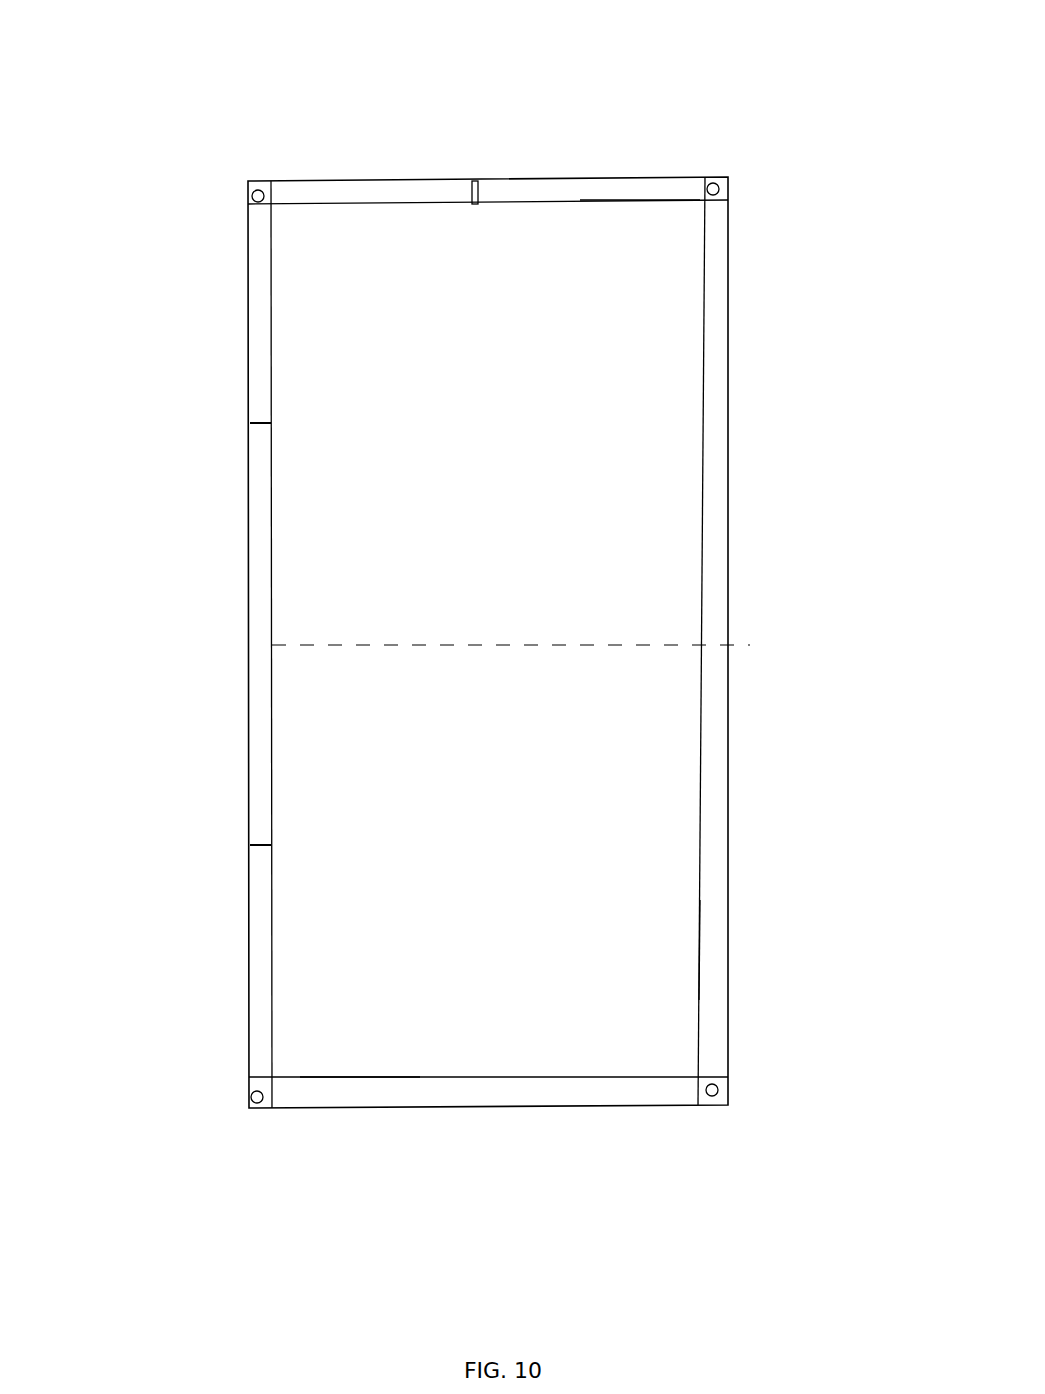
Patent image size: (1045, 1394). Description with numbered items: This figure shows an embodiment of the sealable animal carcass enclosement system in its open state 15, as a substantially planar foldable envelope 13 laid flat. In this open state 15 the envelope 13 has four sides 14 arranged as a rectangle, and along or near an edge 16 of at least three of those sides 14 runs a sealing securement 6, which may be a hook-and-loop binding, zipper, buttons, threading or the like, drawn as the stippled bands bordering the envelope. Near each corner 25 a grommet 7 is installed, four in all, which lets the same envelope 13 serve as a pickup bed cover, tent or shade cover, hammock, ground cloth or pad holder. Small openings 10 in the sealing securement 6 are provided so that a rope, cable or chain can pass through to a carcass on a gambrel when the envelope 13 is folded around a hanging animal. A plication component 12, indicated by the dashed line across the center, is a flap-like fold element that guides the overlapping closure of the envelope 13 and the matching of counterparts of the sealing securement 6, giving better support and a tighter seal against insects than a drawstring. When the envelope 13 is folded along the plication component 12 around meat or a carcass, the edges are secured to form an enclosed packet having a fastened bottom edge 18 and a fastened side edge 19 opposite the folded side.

The sealing securement 6 is at (340, 186).
The grommet 7 is at (250, 195).
The opening 10 is at (478, 181).
The plication component 12 is at (603, 641).
The substantially planar foldable envelope 13 is at (785, 333).
The sides 14 is at (437, 182).
The open state 15 is at (415, 855).
The edge 16 is at (575, 194).
The fastened bottom edge 18 is at (705, 947).
The fastened side edge 19 is at (600, 196).
The corner 25 is at (256, 192).